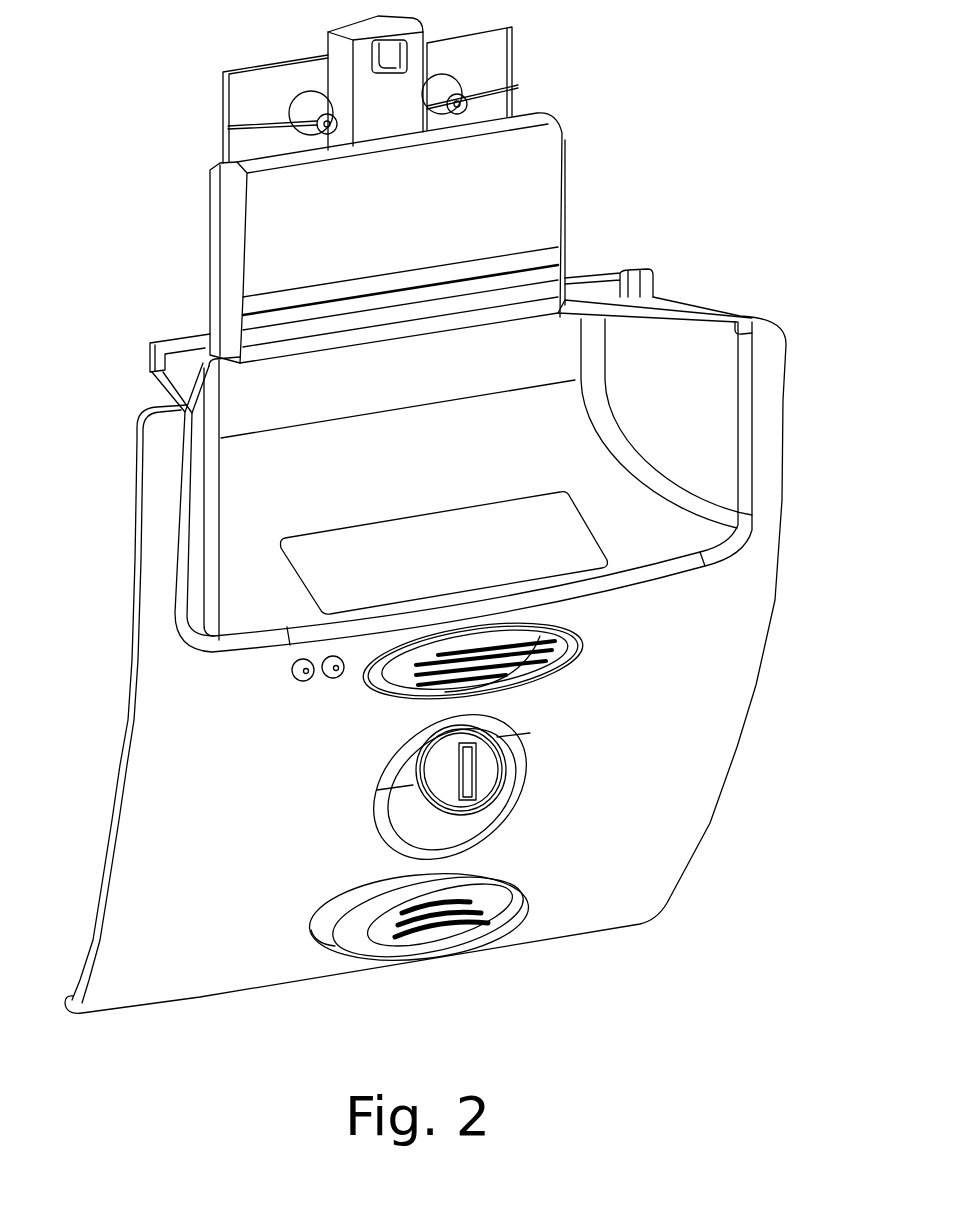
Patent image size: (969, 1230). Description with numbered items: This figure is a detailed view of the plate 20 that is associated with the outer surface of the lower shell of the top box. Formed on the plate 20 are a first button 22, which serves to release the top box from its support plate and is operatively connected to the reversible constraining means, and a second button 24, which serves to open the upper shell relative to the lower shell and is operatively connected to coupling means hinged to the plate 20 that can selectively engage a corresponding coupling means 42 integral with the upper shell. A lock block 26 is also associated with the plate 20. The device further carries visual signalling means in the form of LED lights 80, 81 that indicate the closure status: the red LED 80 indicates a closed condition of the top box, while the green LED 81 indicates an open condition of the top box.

The plate 20 is at (715, 822).
The first button 22 is at (486, 956).
The second button 24 is at (600, 640).
The lock block 26 is at (537, 783).
The coupling means 42 is at (533, 80).
The red LED 80 is at (285, 687).
The green LED 81 is at (335, 687).